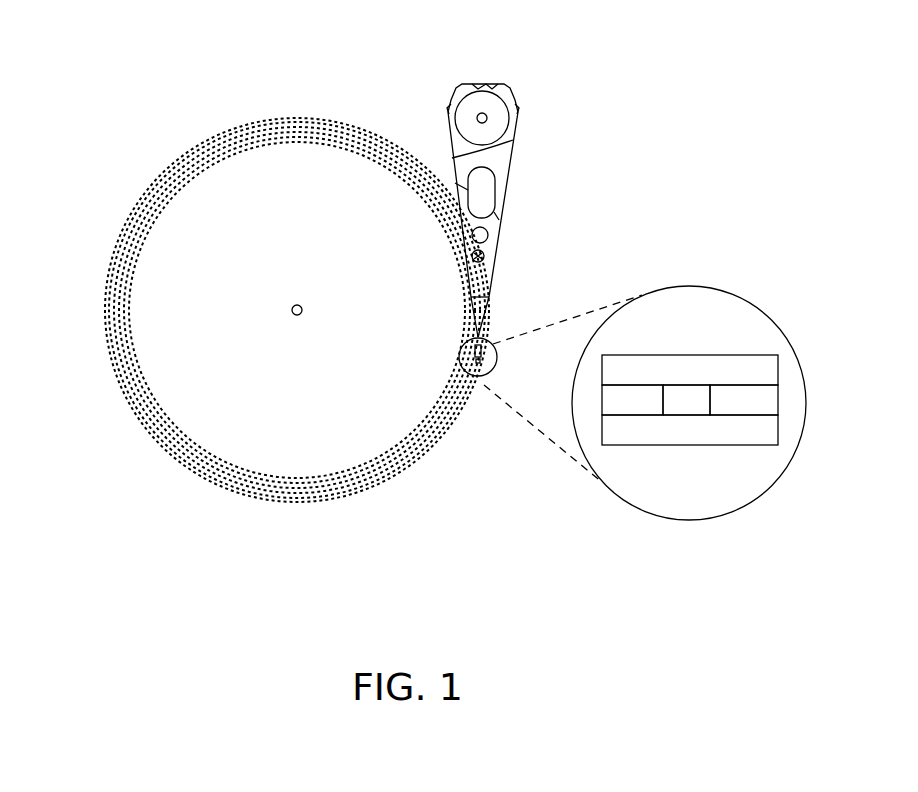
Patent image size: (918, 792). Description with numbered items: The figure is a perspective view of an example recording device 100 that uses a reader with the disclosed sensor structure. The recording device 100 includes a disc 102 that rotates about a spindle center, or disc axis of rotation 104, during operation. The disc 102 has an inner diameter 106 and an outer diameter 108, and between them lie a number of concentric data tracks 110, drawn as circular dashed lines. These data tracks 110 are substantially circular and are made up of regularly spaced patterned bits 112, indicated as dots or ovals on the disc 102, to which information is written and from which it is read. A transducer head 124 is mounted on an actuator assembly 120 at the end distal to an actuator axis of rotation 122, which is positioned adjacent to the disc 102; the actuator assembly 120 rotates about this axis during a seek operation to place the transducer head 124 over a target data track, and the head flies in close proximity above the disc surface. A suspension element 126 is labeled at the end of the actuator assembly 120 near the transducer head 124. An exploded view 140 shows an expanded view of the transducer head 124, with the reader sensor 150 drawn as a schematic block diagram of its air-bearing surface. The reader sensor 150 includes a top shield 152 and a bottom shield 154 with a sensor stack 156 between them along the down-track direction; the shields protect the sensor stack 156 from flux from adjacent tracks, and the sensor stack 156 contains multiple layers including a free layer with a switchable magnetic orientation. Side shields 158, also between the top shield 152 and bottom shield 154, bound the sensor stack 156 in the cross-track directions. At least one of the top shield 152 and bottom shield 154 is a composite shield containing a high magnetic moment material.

The recording device 100 is at (135, 82).
The disc 102 is at (332, 118).
The disc axis of rotation 104 is at (293, 307).
The inner diameter 106 is at (277, 267).
The outer diameter 108 is at (220, 133).
The data tracks 110 is at (136, 410).
The patterned bits 112 is at (185, 462).
The actuator assembly 120 is at (512, 173).
The actuator axis of rotation 122 is at (487, 115).
The transducer head 124 is at (476, 358).
The suspension 126 is at (470, 310).
The exploded view 140 is at (675, 285).
The reader sensor 150 is at (701, 342).
The top shield 152 is at (738, 354).
The bottom shield 154 is at (633, 447).
The sensor stack 156 is at (690, 415).
The side shields 158 is at (778, 400).